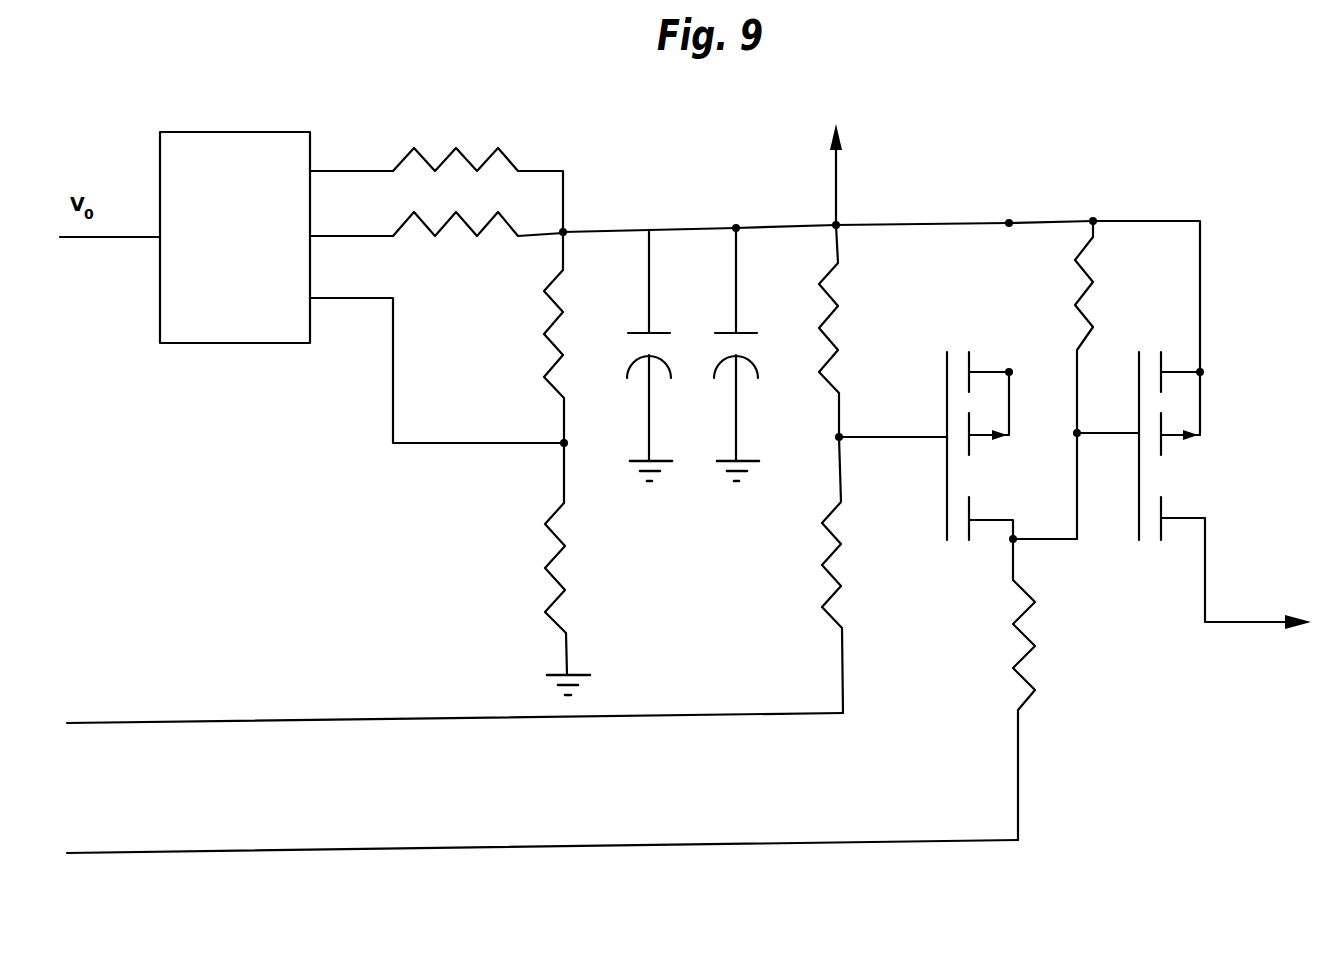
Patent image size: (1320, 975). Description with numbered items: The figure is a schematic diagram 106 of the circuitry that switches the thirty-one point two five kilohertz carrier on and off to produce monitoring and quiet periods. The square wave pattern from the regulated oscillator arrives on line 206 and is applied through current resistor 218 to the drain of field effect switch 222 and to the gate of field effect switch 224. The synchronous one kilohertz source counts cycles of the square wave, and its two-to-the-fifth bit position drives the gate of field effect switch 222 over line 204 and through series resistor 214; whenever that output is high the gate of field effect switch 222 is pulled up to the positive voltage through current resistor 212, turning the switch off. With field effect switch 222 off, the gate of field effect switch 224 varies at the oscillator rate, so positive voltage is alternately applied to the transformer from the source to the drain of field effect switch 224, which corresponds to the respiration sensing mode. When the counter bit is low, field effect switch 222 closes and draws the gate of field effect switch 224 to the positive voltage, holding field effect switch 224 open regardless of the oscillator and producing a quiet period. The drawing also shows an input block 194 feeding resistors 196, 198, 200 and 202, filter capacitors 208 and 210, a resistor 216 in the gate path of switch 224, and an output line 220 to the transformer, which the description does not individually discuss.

The schematic diagram 106 is at (942, 163).
The amplifier block 194 is at (265, 343).
The resistor 196 is at (515, 160).
The resistor 198 is at (402, 226).
The resistor 200 is at (549, 372).
The resistor 202 is at (557, 553).
The line 204 is at (232, 723).
The line 206 is at (277, 853).
The capacitor 208 is at (742, 333).
The capacitor 210 is at (654, 333).
The current resistor 212 is at (828, 338).
The series resistor 214 is at (831, 550).
The resistor 216 is at (1085, 314).
The current resistor 218 is at (1026, 673).
The output line to transformer 220 is at (1207, 570).
The field effect switch 222 is at (961, 556).
The field effect switch 224 is at (1154, 553).